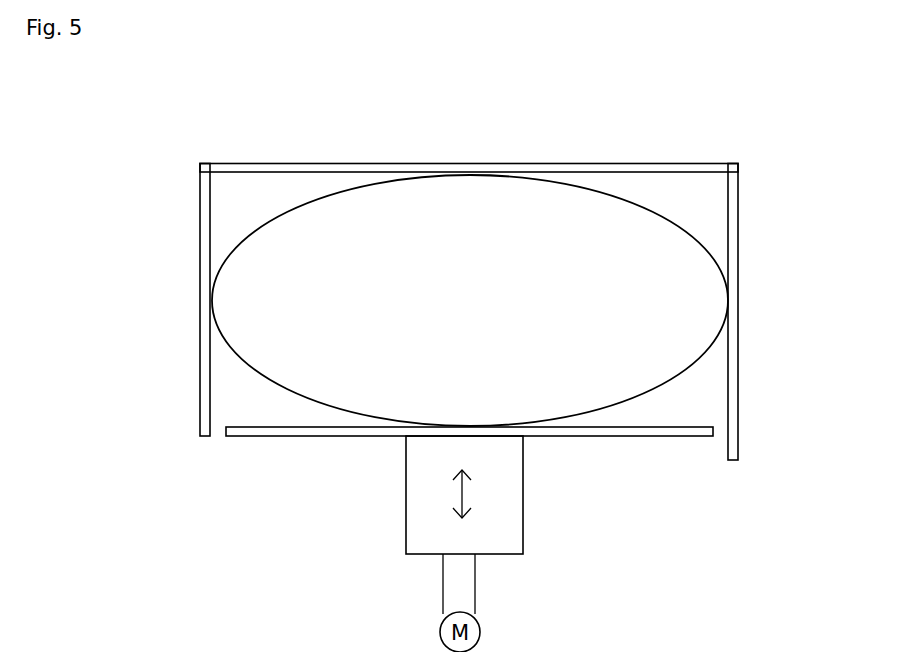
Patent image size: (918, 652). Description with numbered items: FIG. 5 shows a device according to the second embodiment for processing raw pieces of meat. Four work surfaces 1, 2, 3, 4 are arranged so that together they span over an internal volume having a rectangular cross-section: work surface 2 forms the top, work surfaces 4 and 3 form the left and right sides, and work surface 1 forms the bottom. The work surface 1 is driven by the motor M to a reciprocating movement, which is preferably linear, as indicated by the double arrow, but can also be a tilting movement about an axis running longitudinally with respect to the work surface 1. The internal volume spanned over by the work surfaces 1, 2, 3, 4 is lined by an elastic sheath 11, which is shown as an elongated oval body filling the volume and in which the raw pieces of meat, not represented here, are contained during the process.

The work surface 1 is at (645, 438).
The work surface 2 is at (632, 165).
The work surface 3 is at (742, 274).
The work surface 4 is at (190, 270).
The elastic sheath 11 is at (701, 366).